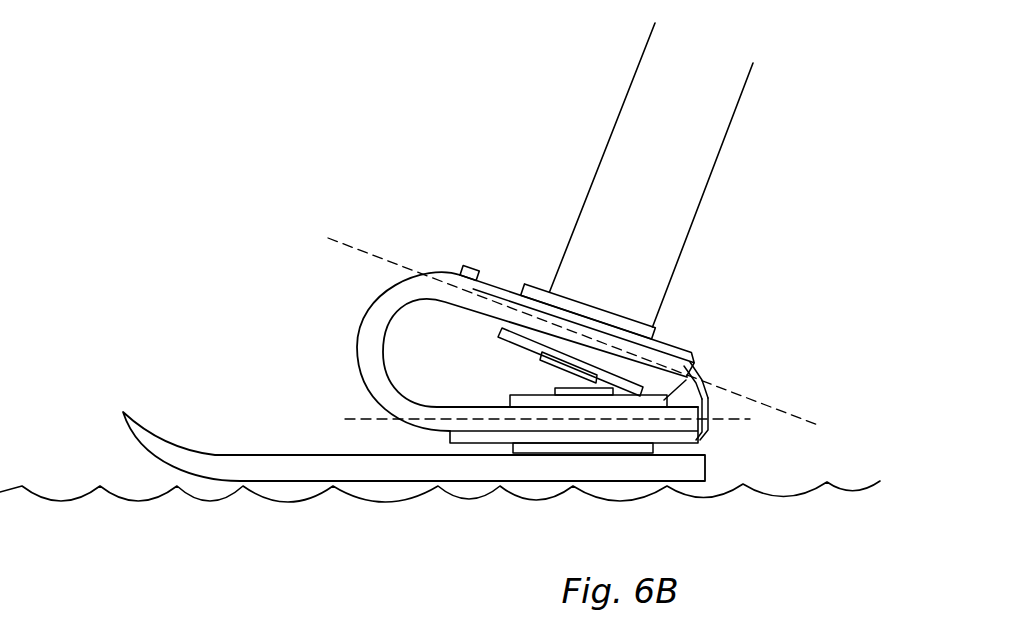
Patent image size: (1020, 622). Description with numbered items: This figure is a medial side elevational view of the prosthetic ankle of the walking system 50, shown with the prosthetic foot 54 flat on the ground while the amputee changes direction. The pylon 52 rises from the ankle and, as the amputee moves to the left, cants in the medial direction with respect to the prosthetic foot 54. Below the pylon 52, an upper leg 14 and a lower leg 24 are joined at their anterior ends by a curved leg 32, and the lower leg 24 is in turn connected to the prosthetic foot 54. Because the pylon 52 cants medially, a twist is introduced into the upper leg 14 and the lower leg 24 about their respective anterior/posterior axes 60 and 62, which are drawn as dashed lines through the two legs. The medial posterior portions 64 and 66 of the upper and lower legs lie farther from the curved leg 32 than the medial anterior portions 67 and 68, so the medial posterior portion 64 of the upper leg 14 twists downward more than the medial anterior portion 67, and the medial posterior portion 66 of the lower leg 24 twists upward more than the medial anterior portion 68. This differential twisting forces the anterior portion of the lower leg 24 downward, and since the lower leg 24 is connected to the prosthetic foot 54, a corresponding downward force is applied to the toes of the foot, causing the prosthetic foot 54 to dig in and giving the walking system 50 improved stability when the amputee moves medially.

The upper leg 14 is at (530, 322).
The lower leg 24 is at (633, 427).
The curved leg 32 is at (372, 376).
The walking system 50 is at (372, 198).
The pylon 52 is at (725, 177).
The prosthetic foot 54 is at (387, 511).
The anterior/posterior axis of the upper leg 60 is at (395, 263).
The anterior/posterior axis of the lower leg 62 is at (390, 418).
The medial posterior portion of the upper leg 64 is at (700, 373).
The medial posterior portion of the lower leg 66 is at (683, 415).
The medial anterior portion of the upper leg 67 is at (474, 287).
The medial anterior portion of the lower leg 68 is at (472, 427).